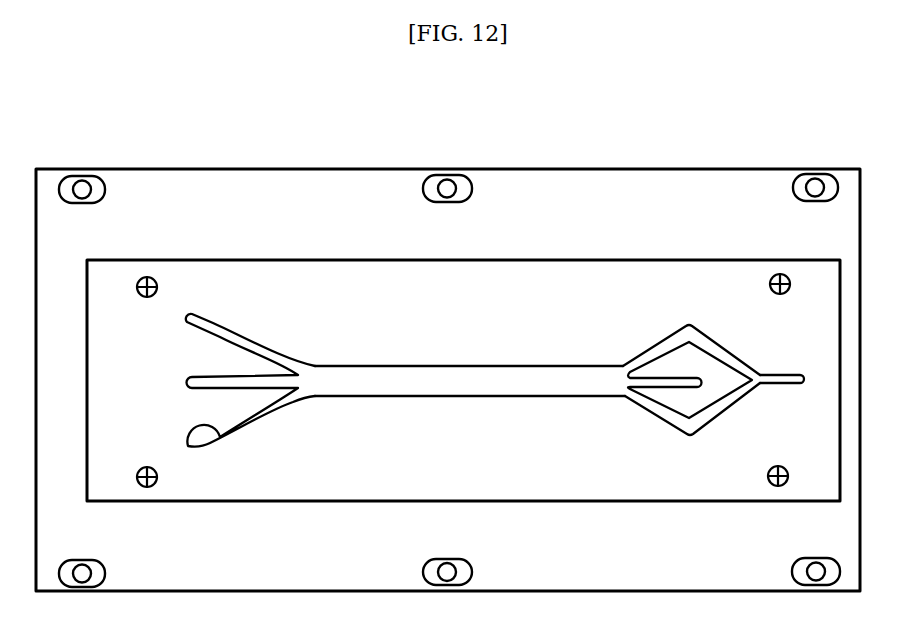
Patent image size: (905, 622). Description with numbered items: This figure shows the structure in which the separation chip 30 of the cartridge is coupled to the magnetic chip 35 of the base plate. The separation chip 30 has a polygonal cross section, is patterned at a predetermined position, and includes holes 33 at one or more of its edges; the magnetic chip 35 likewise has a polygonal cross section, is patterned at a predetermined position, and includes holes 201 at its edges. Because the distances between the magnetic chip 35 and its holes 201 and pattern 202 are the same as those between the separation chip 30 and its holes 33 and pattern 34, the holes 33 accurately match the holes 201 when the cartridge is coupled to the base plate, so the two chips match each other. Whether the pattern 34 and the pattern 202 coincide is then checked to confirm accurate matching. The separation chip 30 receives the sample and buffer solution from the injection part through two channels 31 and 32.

The separation chip 30 is at (266, 230).
The holes 33 is at (148, 277).
The holes 201 is at (463, 380).
The magnetic chip 35 is at (624, 283).
The pattern 202 is at (397, 378).
The pattern 34 is at (498, 378).
The channel 31 is at (699, 374).
The channel 32 is at (804, 375).